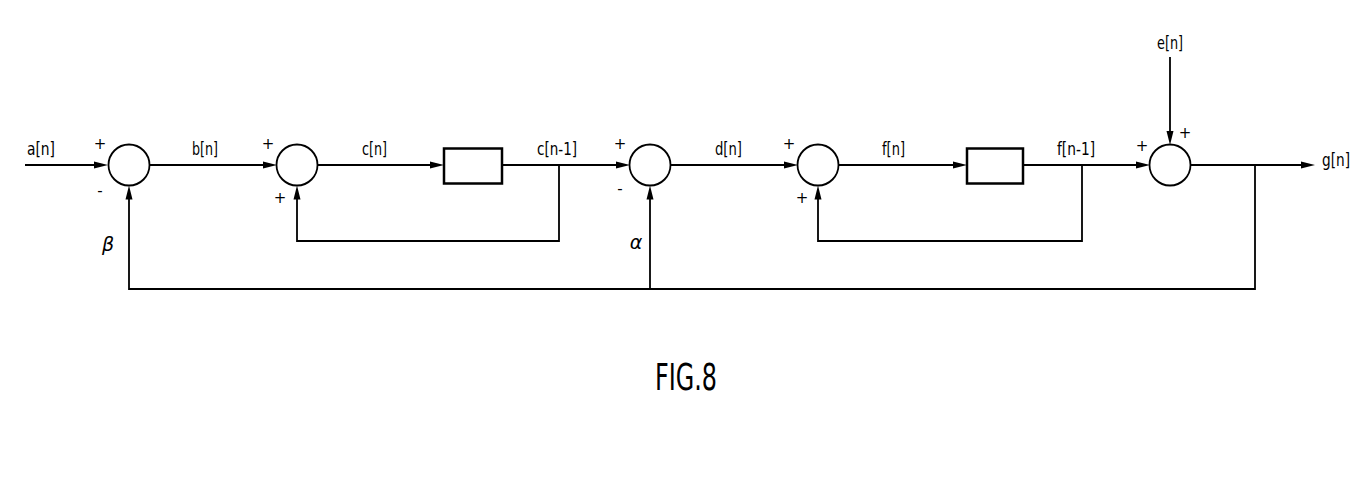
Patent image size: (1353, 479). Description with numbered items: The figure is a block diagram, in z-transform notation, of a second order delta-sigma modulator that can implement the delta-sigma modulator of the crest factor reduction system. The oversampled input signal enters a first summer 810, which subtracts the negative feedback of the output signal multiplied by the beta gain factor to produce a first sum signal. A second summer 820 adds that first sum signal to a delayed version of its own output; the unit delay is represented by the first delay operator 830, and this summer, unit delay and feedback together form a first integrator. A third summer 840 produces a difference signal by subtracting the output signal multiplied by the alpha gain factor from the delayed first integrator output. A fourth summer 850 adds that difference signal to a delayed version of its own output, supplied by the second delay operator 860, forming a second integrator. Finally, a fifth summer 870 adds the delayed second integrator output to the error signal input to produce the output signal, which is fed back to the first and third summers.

The first summer 810 is at (131, 145).
The second summer 820 is at (297, 145).
The z⁻¹ operator 830 is at (476, 148).
The third summer 840 is at (665, 179).
The fourth summer 850 is at (819, 145).
The z⁻¹ operator 860 is at (995, 148).
The fifth summer 870 is at (1186, 179).